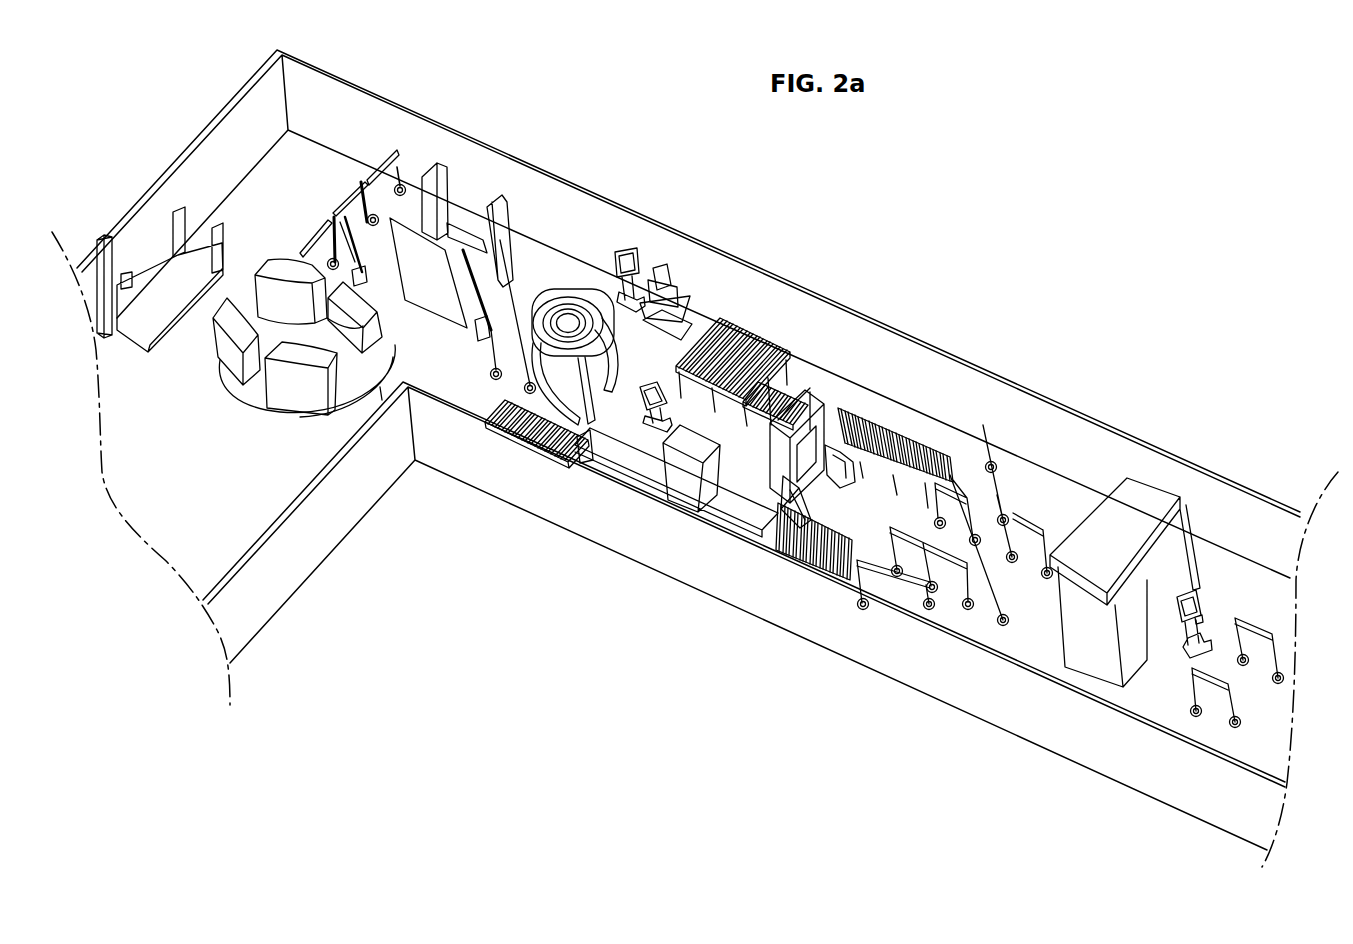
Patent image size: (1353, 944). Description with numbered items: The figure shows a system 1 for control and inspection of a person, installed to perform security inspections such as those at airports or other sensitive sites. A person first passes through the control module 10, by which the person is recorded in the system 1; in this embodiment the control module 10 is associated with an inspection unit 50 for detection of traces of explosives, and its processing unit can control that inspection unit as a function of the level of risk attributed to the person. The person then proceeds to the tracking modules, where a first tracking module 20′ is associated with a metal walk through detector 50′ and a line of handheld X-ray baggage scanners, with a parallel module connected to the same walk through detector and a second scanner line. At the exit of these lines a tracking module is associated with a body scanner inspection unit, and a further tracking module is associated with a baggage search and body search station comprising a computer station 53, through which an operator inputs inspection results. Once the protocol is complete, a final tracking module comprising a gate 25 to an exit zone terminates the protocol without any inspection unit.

The system for control and tracking of a person 1 is at (847, 206).
The control module 10 is at (1210, 609).
The first tracking module 20′ is at (809, 488).
The gate 25 is at (340, 205).
The inspection unit 50 is at (1117, 521).
The metal walk through detector 50′ is at (776, 456).
The computer station 53 is at (661, 269).